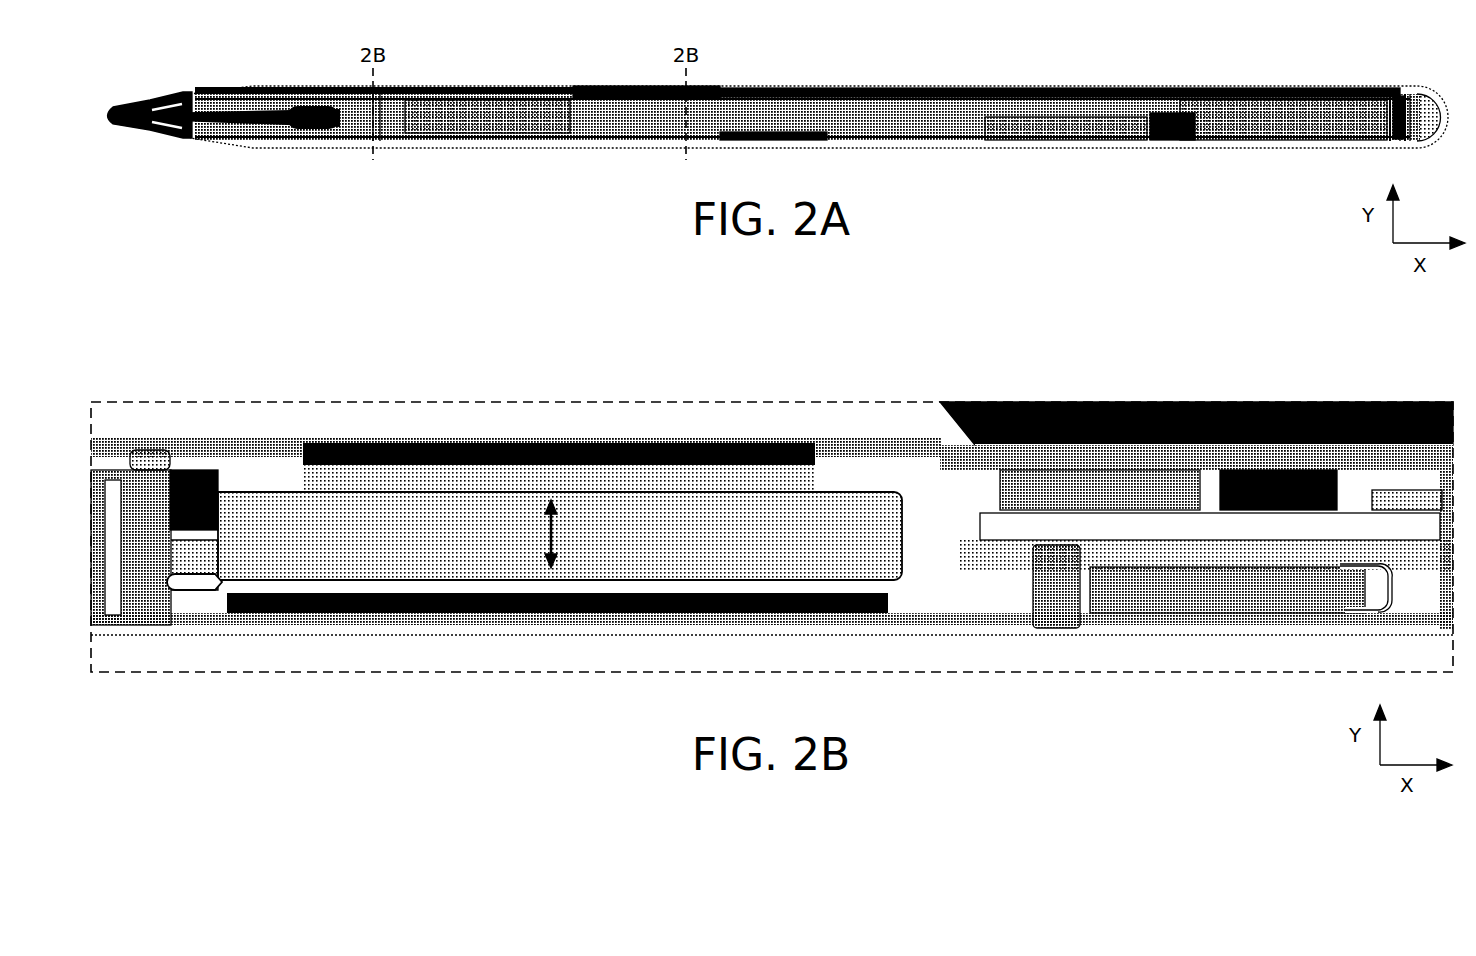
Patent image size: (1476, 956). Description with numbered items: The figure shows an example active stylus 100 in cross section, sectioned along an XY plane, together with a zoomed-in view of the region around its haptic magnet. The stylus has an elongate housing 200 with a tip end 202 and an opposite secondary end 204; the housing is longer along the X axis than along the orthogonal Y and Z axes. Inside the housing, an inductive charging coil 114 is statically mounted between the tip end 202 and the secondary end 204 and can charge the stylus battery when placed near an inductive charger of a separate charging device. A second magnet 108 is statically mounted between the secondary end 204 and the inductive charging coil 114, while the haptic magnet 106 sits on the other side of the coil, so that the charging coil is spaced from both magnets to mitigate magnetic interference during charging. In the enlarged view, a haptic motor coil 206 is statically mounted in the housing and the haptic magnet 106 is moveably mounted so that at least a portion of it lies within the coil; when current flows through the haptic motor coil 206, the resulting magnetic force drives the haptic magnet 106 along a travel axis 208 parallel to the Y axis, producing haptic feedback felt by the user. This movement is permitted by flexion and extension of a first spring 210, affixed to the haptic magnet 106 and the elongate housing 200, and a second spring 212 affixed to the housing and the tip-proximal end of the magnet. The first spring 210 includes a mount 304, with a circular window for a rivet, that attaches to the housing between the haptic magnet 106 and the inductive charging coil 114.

In FIG. 2A, the active stylus 100 is at (182, 36).
In FIG. 2A, the elongate housing 200 is at (288, 88).
In FIG. 2A, the tip end 202 is at (145, 102).
In FIG. 2A, the secondary end 204 is at (1422, 88).
In FIG. 2A, the haptic magnet 106 is at (455, 134).
In FIG. 2B, the haptic magnet 106 is at (462, 583).
In FIG. 2A, the inductive charging coil 114 is at (800, 140).
In FIG. 2A, the second magnet 108 is at (1066, 142).
In FIG. 2B, the haptic motor coil 206 is at (228, 470).
In FIG. 2B, the travel axis 208 is at (548, 512).
In FIG. 2B, the second spring 212 is at (192, 592).
In FIG. 2B, the mount 304 is at (1035, 628).
In FIG. 2B, the first spring 210 is at (1152, 613).